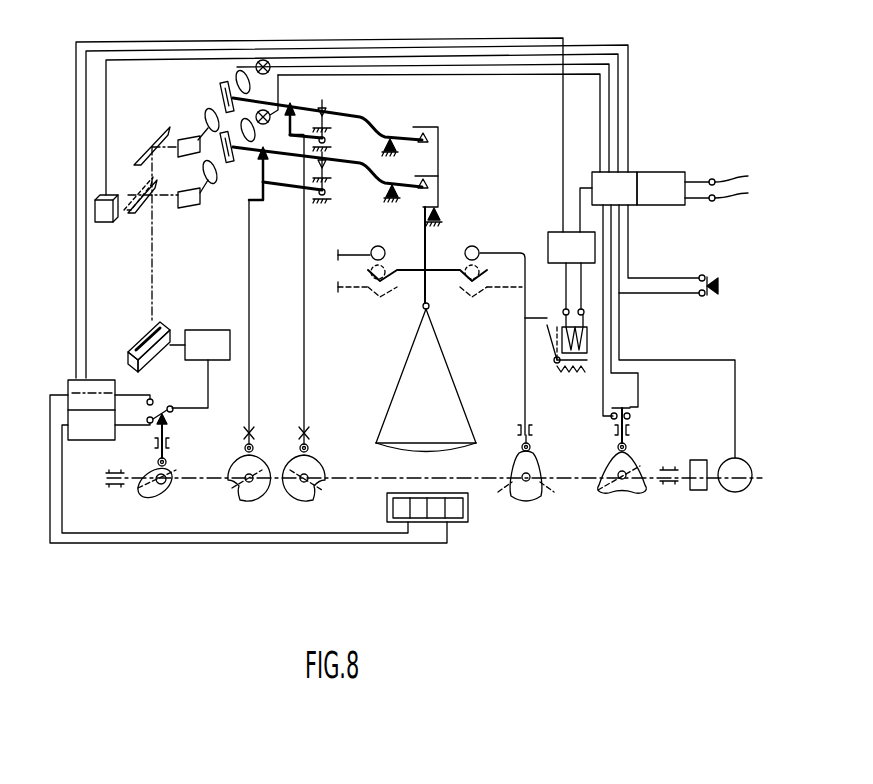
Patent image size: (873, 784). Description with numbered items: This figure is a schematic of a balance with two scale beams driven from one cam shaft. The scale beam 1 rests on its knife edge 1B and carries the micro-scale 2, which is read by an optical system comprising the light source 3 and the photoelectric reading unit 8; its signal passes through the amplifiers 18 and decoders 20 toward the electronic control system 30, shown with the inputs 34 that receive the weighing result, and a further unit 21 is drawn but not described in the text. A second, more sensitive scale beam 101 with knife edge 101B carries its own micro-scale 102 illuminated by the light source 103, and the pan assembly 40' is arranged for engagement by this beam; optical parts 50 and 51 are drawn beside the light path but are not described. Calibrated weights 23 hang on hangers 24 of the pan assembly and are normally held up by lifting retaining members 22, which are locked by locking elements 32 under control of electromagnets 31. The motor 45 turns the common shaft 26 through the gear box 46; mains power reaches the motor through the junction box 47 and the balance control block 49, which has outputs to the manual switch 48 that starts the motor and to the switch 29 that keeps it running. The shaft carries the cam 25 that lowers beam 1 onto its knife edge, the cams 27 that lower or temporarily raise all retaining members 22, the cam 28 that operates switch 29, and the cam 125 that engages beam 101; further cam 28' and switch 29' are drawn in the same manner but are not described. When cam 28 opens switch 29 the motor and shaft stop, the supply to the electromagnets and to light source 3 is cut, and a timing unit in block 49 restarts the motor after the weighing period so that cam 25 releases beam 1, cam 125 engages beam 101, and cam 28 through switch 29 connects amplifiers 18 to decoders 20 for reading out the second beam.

The scale beam 1 is at (391, 170).
The knife edge 1B is at (331, 165).
The micro-scale 2 is at (233, 155).
The light source 3 is at (268, 121).
The photoelectric reading unit 8 is at (141, 339).
The amplifiers 18 is at (203, 331).
The decoders 20 is at (68, 390).
The counter 21 is at (458, 510).
The lifting retaining member 22 is at (525, 334).
The calibrated weight 23 is at (479, 250).
The hanger 24 is at (439, 268).
The cam 25 is at (243, 500).
The shaft 26 is at (578, 476).
The cam 27 is at (536, 494).
The cam 28 is at (628, 490).
The cam 28' is at (156, 498).
The switch 29 is at (640, 420).
The switch 29' is at (175, 428).
The electronic control system 30 is at (560, 234).
The electromagnet 31 is at (585, 328).
The locking element 32 is at (554, 358).
The inputs 34 is at (77, 367).
The pan assembly 40' is at (439, 167).
The motor 45 is at (750, 481).
The gear box 46 is at (699, 491).
The junction box 47 is at (676, 172).
The manual switch 48 is at (720, 286).
The balance control block 49 is at (633, 173).
The light source 50 is at (97, 212).
The mirror 51 is at (140, 197).
The second scale beam 101 is at (378, 130).
The knife edge 101B is at (333, 117).
The micro-scale 102 is at (222, 95).
The light source 103 is at (263, 60).
The cam 125 is at (312, 499).